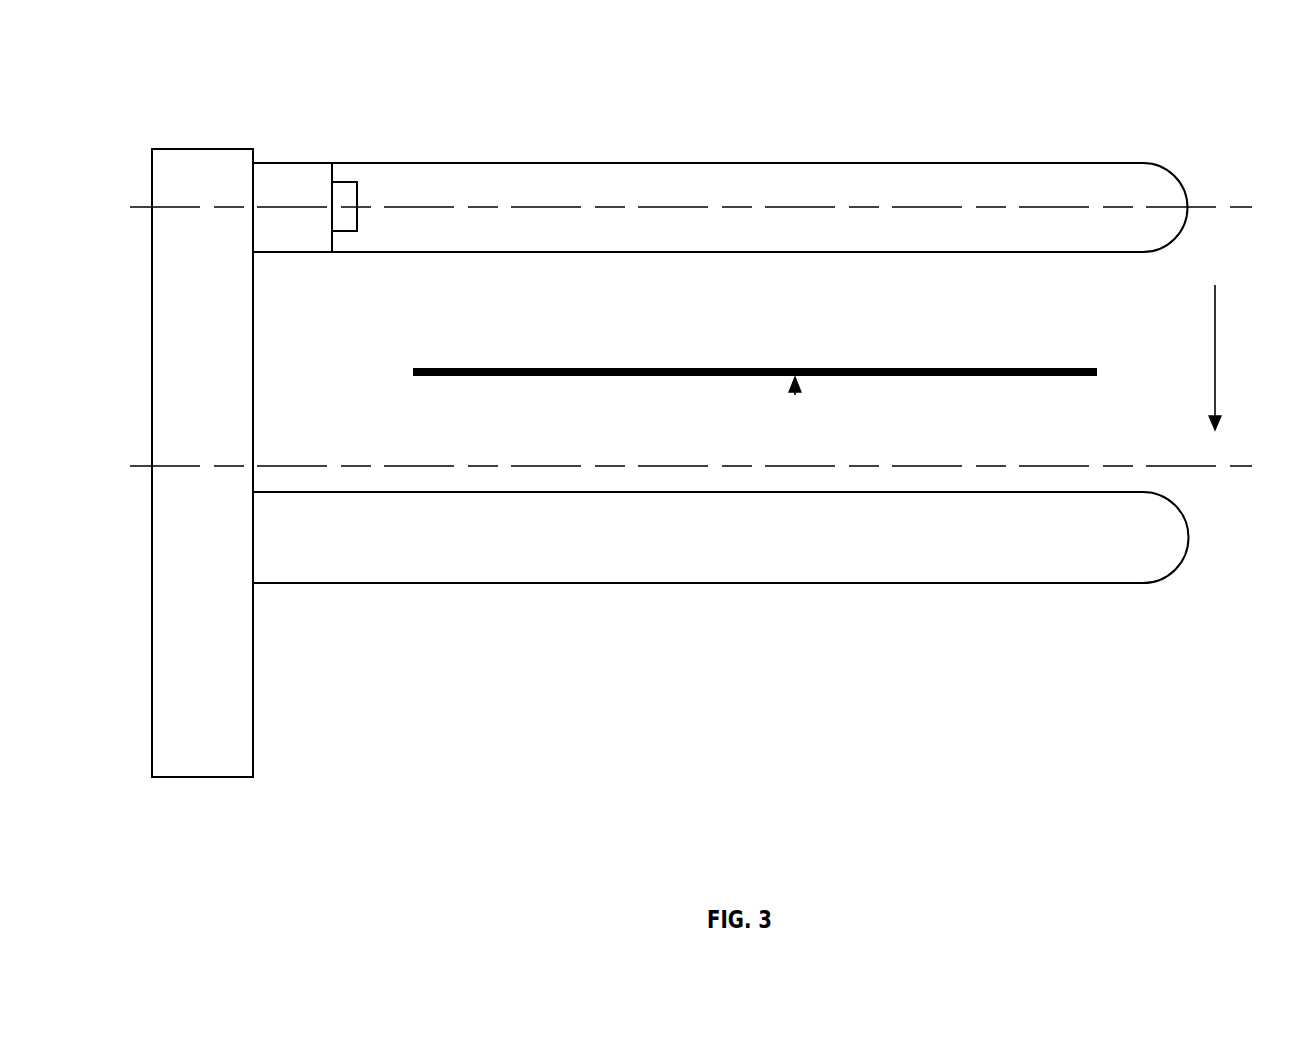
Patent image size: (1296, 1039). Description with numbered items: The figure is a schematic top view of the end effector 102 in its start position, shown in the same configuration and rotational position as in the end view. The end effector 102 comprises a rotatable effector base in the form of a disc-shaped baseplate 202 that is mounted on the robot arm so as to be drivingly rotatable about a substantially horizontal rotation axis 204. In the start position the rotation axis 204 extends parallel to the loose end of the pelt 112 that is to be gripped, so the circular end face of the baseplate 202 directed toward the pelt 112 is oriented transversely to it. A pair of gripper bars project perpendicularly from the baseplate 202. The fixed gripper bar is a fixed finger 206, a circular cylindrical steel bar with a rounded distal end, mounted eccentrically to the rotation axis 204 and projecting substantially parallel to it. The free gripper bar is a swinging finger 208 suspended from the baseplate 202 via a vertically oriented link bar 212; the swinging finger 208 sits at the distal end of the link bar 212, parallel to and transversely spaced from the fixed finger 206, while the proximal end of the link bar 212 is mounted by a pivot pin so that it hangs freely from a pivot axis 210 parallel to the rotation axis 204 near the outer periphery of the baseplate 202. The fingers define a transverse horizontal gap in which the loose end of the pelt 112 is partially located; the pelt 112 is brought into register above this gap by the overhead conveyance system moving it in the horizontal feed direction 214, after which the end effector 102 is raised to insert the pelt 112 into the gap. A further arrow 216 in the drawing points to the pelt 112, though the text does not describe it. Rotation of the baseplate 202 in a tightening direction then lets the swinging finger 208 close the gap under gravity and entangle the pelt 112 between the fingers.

The end effector 102 is at (997, 58).
The pelt 112 is at (590, 368).
The baseplate 202 is at (181, 354).
The rotation axis 204 is at (355, 466).
The fixed finger 206 is at (898, 567).
The swinging finger 208 is at (893, 236).
The pivot axis 210 is at (537, 207).
The link bar 212 is at (297, 180).
The feed direction 214 is at (1215, 338).
The arrow indicating surface 216 is at (795, 395).